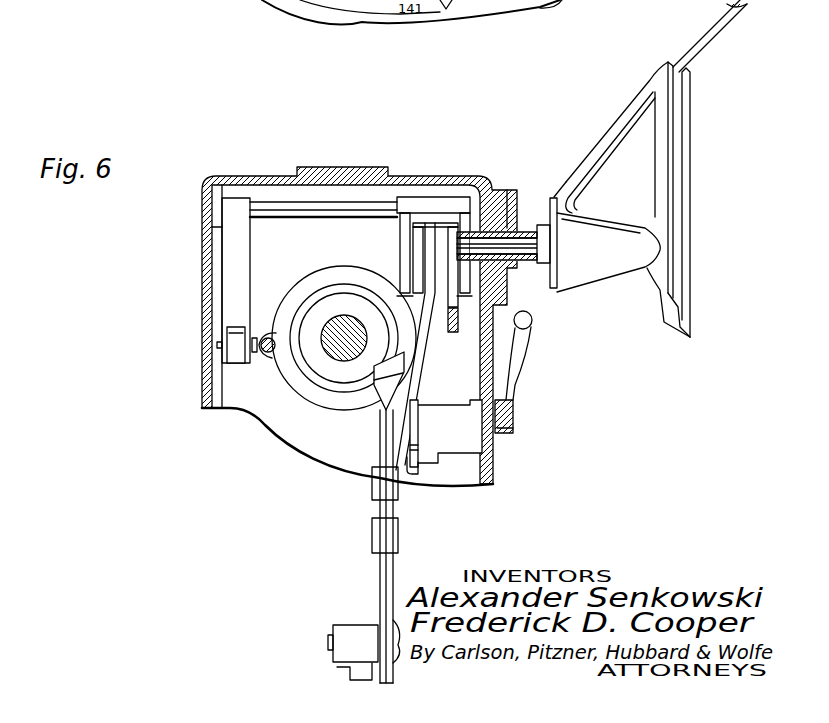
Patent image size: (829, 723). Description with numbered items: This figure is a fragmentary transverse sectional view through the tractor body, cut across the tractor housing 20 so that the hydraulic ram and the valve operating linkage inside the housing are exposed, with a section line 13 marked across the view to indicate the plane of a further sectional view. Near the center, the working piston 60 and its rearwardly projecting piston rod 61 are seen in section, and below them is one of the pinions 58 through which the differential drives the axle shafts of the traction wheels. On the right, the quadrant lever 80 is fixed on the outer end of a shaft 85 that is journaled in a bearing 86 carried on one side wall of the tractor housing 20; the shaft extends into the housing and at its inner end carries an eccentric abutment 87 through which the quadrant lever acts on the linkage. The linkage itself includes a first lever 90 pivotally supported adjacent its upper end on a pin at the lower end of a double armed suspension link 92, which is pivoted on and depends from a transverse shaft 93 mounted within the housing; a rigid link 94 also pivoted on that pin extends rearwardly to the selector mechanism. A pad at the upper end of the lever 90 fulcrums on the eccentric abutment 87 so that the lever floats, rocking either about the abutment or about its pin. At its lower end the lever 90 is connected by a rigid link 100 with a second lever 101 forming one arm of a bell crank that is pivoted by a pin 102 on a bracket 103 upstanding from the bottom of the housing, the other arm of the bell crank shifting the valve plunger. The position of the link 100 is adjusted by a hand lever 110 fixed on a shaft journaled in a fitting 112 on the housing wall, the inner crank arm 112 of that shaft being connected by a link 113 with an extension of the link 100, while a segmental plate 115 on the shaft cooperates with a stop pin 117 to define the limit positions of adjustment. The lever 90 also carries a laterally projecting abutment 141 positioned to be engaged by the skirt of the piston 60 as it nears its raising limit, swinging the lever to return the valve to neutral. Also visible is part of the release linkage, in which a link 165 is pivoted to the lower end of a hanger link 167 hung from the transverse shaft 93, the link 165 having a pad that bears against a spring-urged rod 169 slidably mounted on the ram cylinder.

The section line 13- 13 is at (227, 142).
The tractor housing 20 is at (421, 176).
The pinions 58 is at (289, 377).
The working piston 60 is at (318, 395).
The piston rod 61 is at (335, 350).
The quadrant lever 80 is at (706, 33).
The shaft 85 is at (533, 262).
The bearing 86 is at (533, 231).
The eccentric abutment 87 is at (416, 237).
The first lever 90 is at (418, 357).
The double armed suspension link 92 is at (406, 251).
The transverse shaft 93 is at (356, 218).
The rigid link 94 is at (459, 326).
The rigid link 100 is at (372, 541).
The second lever 101 is at (380, 575).
The pin 102 is at (333, 641).
The bracket 103 is at (343, 668).
The hand lever 110 is at (523, 362).
The fitting 112 is at (416, 404).
The link 113 is at (413, 433).
The segmental plate 115 is at (412, 437).
The stop pin 117 is at (420, 470).
The laterally projecting abutment 141 is at (375, 380).
The link 165 is at (240, 364).
The hanger link 167 is at (227, 297).
The rod 169 is at (267, 353).